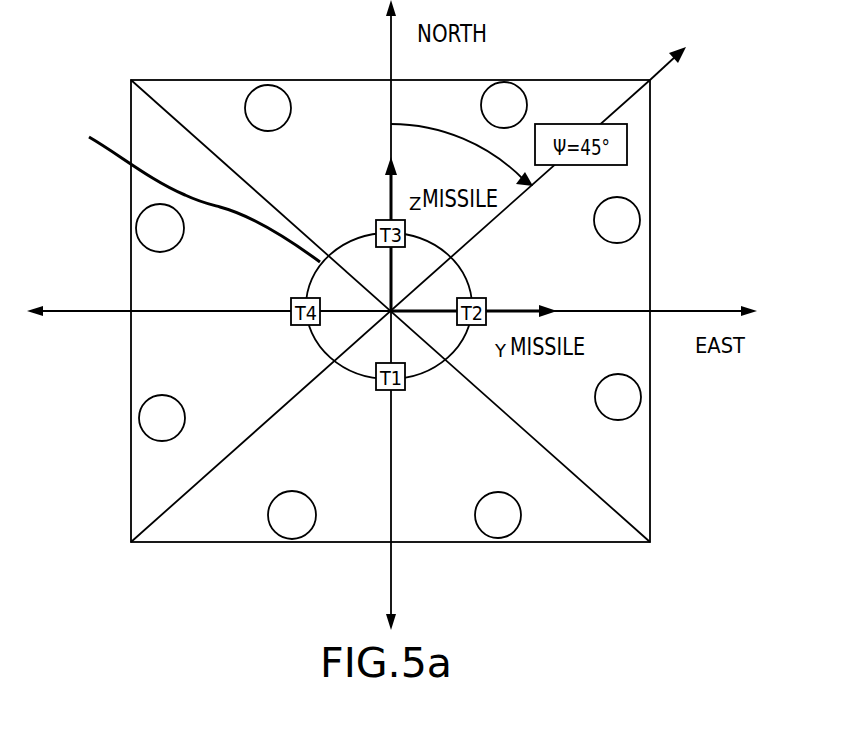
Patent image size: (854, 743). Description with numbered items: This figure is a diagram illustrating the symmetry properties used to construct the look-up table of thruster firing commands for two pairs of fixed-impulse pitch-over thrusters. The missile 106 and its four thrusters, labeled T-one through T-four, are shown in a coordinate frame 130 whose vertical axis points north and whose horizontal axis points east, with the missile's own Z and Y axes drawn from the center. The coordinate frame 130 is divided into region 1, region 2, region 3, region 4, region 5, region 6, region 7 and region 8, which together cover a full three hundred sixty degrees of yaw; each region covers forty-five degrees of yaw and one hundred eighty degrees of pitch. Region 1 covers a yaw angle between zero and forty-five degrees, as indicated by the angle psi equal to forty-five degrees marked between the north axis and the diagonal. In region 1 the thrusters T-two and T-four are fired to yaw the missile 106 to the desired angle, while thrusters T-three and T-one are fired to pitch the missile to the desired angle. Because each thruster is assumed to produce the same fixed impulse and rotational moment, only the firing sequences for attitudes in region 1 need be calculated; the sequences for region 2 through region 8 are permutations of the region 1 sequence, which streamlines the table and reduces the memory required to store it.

The missile 106 is at (185, 190).
The coordinate frame 130 is at (249, 569).
The region 1 is at (504, 105).
The region 2 is at (617, 220).
The region 3 is at (618, 397).
The region 4 is at (498, 515).
The region 5 is at (292, 515).
The region 6 is at (162, 418).
The region 7 is at (160, 228).
The region 8 is at (268, 108).